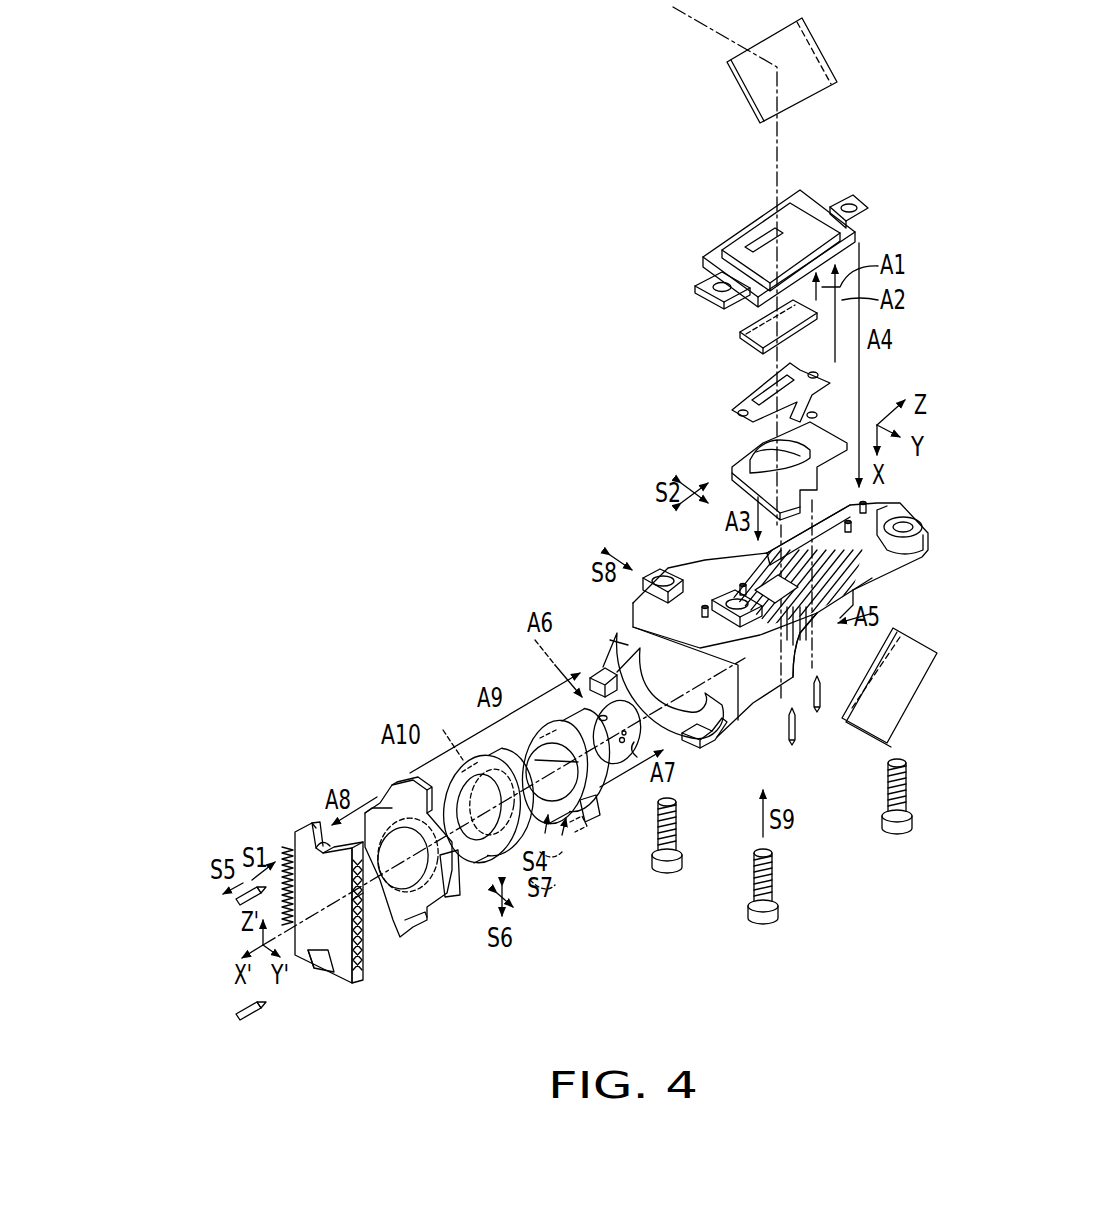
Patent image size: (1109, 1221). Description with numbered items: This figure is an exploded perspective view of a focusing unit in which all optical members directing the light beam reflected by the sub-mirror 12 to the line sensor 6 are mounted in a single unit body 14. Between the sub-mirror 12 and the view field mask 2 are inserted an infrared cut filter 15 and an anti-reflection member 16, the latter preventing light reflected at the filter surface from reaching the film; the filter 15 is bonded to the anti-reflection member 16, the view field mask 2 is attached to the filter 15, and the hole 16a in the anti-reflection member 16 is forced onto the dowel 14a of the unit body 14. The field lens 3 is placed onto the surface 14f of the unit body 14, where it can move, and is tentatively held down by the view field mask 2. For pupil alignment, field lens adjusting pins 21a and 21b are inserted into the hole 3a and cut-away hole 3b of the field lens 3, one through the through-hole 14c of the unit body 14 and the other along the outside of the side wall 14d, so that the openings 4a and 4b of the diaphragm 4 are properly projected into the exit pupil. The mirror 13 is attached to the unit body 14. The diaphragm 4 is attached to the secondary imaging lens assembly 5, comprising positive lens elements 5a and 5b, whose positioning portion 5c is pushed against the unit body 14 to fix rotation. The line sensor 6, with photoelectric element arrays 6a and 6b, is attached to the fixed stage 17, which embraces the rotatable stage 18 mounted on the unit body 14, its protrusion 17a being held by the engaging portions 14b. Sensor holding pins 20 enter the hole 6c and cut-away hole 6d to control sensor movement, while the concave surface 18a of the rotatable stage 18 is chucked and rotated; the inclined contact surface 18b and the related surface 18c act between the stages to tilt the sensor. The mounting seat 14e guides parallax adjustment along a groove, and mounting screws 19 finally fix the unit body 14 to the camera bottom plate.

The sub-mirror 12 is at (752, 88).
The anti-reflection member 16 is at (757, 240).
The hole 16a is at (850, 203).
The infrared cut filter 15 is at (740, 338).
The view field mask 2 is at (746, 407).
The field lens 3 is at (746, 456).
The hole 3a is at (815, 418).
The cut-away hole 3b is at (740, 480).
The unit body 14 is at (850, 597).
The dowel 14a is at (862, 520).
The engaging portions 14b is at (600, 665).
The through-hole 14c is at (856, 590).
The side wall 14d is at (818, 623).
The mounting seat 14e is at (660, 572).
The surface 14f is at (745, 570).
The mirror 13 is at (898, 722).
The field lens adjusting pin 21a is at (818, 712).
The field lens adjusting pin 21b is at (793, 746).
The mounting screws 19 is at (680, 866).
The diaphragm 4 is at (607, 710).
The opening 4a is at (625, 744).
The opening 4b is at (618, 758).
The secondary imaging lens assembly 5 is at (540, 755).
The positive lens element 5a is at (548, 733).
The positive lens element 5b is at (600, 812).
The positioning portion 5c is at (588, 828).
The rotatable stage 18 is at (470, 770).
The concave surface 18a is at (458, 765).
The contact surface 18b is at (545, 886).
The lug 18c is at (562, 852).
The fixed stage 17 is at (385, 800).
The protrusion 17a is at (367, 815).
The line sensor 6 is at (298, 836).
The photoelectric element array 6a is at (304, 832).
The photoelectric element array 6b is at (360, 958).
The hole 6c is at (320, 973).
The cut-away hole 6d is at (314, 828).
The sensor holding pins 20 is at (285, 850).